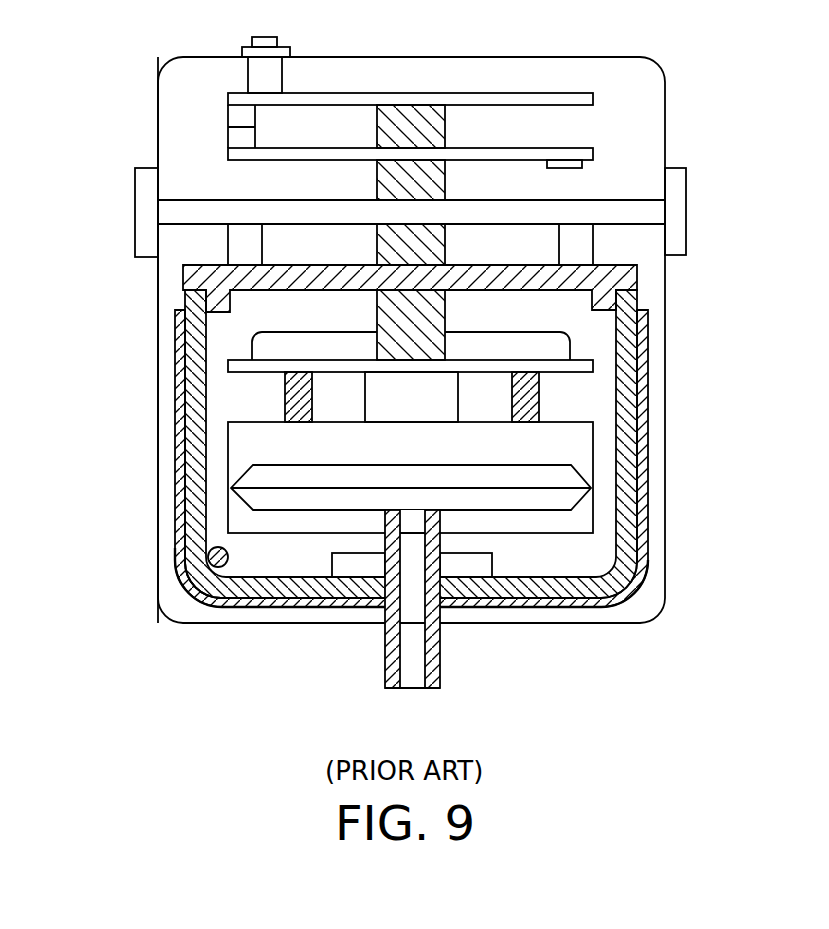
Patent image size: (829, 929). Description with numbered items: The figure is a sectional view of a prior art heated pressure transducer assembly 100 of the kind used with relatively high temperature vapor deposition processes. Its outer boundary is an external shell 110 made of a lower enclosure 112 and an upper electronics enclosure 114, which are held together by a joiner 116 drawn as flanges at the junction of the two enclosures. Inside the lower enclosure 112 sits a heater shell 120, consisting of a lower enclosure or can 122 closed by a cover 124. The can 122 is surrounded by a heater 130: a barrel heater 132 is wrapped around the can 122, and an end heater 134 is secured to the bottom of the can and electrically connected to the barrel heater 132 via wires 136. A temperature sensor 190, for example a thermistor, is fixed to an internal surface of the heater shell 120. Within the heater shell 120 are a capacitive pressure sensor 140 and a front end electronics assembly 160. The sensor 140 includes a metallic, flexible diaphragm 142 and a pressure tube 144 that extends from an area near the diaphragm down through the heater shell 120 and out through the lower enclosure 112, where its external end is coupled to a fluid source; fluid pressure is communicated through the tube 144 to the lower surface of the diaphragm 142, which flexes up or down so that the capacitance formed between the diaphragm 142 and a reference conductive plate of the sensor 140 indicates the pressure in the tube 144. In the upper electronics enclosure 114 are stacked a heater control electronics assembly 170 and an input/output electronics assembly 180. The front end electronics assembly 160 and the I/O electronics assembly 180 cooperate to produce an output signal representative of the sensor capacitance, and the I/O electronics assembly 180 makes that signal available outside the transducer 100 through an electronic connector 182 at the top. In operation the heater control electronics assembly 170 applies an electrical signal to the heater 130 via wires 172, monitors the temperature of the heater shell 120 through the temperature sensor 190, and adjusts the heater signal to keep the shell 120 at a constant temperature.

The heated pressure transducer assembly 100 is at (126, 443).
The external shell 110 is at (273, 623).
The lower enclosure 112 is at (365, 623).
The upper electronics enclosure 114 is at (392, 57).
The joiner 116 is at (135, 202).
The heater shell 120 is at (182, 599).
The can 122 is at (185, 582).
The cover 124 is at (183, 276).
The heater 130 is at (646, 505).
The barrel heater 132 is at (634, 533).
The end heater 134 is at (558, 608).
The wires 136 is at (657, 606).
The capacitive pressure sensor 140 is at (594, 453).
The diaphragm 142 is at (331, 488).
The pressure tube 144 is at (441, 668).
The front end electronics assembly 160 is at (571, 349).
The heater control electronics assembly 170 is at (555, 148).
The wires 172 is at (583, 168).
The input/output electronics assembly 180 is at (543, 93).
The electronic connector 182 is at (266, 37).
The temperature sensor 190 is at (245, 546).